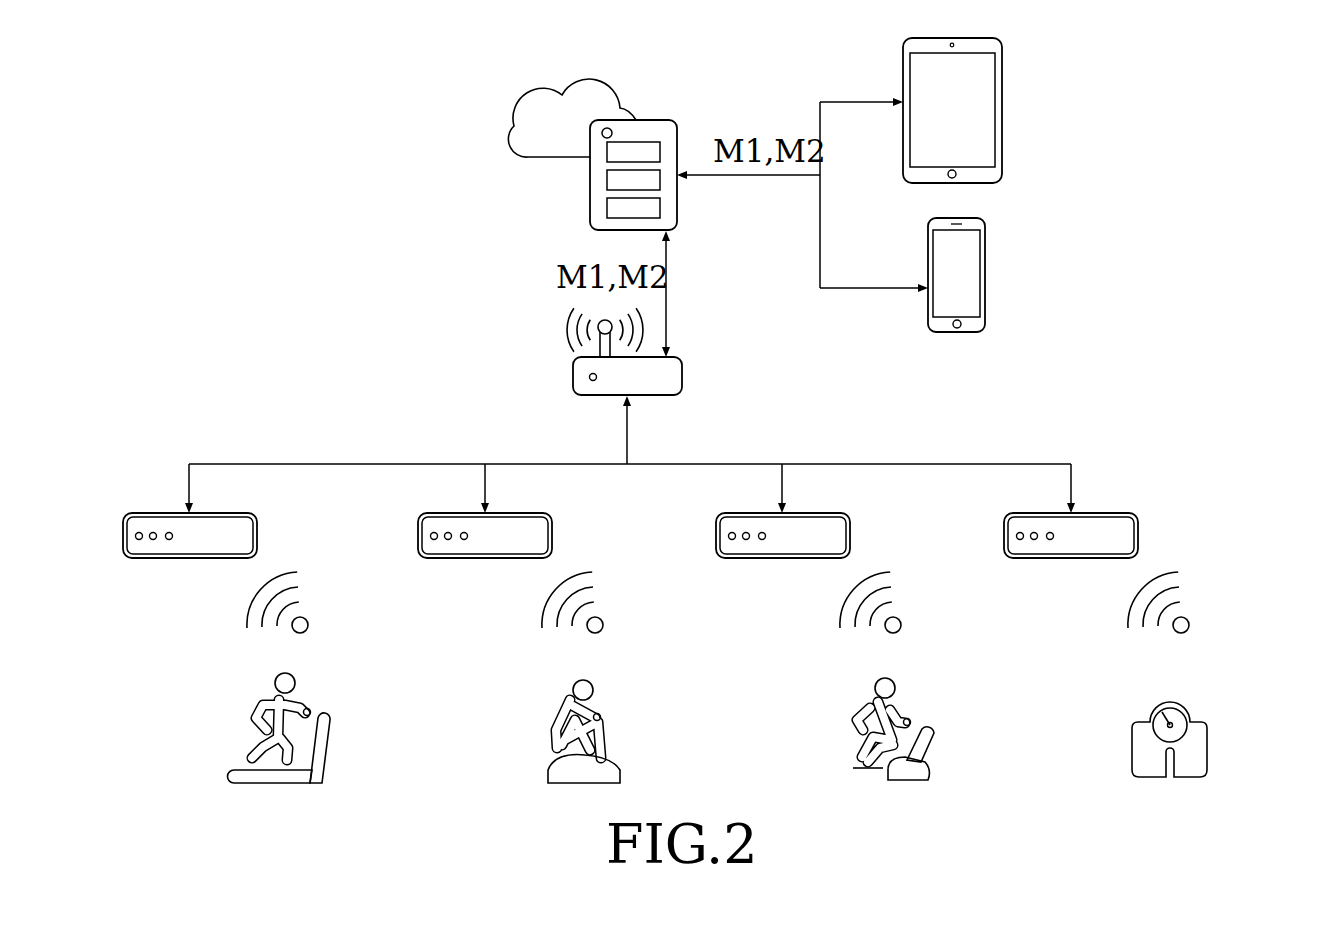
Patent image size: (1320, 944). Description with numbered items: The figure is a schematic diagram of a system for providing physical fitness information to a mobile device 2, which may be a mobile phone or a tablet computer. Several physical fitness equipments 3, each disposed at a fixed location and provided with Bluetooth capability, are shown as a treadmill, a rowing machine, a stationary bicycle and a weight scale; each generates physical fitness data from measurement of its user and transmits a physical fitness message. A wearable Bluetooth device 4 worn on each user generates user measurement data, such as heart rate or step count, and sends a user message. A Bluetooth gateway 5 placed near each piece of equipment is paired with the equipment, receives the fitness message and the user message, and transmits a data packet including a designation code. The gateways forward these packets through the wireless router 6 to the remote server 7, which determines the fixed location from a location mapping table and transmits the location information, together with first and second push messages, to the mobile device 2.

The mobile device 2 is at (1006, 110).
The physical fitness equipment 3 is at (328, 773).
The wearable Bluetooth device 4 is at (315, 700).
The Bluetooth gateway 5 is at (169, 568).
The wireless router 6 is at (687, 380).
The remote server 7 is at (580, 178).